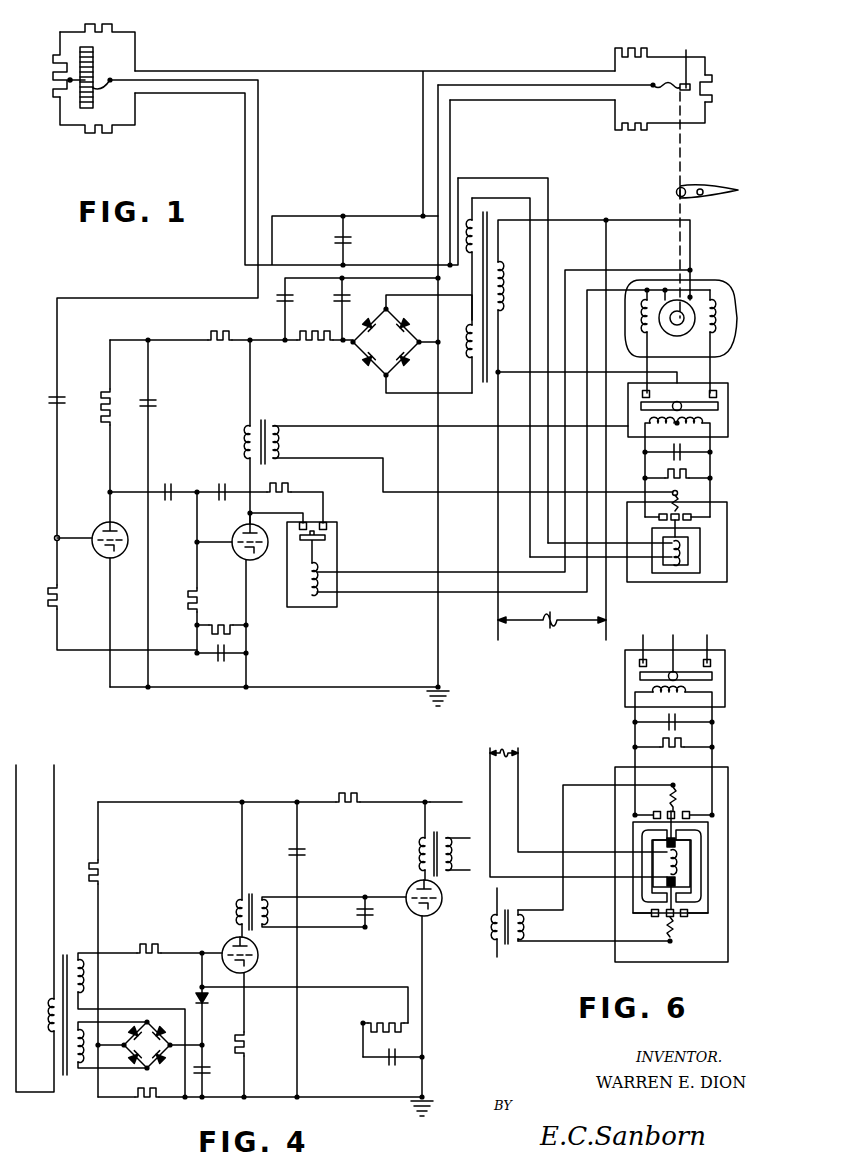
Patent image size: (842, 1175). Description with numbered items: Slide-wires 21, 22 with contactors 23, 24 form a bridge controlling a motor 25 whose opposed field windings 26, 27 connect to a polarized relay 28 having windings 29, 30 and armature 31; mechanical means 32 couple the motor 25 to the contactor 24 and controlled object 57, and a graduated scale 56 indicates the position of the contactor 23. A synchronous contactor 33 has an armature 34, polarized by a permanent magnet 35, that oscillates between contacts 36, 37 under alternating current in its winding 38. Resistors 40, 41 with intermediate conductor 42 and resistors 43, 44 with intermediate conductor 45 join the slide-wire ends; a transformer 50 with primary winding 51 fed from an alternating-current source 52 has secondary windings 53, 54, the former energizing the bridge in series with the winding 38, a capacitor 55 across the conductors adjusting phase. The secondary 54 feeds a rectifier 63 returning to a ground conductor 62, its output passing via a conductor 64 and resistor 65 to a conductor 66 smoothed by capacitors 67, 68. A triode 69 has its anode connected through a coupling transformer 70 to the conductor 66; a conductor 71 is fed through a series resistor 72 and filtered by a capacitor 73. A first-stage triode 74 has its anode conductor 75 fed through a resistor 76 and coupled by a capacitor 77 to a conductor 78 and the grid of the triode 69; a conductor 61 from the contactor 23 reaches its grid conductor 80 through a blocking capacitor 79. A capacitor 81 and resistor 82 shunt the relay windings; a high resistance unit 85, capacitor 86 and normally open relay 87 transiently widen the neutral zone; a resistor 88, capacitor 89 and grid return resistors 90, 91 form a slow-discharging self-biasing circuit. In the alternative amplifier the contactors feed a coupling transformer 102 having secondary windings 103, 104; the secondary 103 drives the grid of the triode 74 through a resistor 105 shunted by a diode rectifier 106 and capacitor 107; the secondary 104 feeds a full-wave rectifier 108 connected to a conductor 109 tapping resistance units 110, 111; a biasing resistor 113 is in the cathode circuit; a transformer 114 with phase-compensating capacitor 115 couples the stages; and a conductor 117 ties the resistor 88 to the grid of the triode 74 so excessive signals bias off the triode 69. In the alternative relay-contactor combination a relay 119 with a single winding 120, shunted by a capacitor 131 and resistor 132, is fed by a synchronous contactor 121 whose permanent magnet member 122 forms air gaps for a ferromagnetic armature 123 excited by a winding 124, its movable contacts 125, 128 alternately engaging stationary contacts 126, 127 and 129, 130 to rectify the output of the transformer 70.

In FIG. 1, the slide-wire 21 is at (52, 75).
In FIG. 1, the slide-wire 22 is at (712, 98).
In FIG. 1, the contactor 23 is at (78, 78).
In FIG. 1, the contactor 24 is at (690, 59).
In FIG. 1, the electric motor 25 is at (727, 297).
In FIG. 1, the field winding 26 is at (644, 338).
In FIG. 1, the field winding 27 is at (716, 338).
In FIG. 1, the polarized relay 28 is at (730, 394).
In FIG. 1, the relay winding 29 is at (652, 427).
In FIG. 1, the relay winding 30 is at (712, 428).
In FIG. 1, the armature 31 is at (740, 422).
In FIG. 1, the mechanical means 32 is at (684, 143).
In FIG. 1, the synchronous contactor 33 is at (727, 508).
In FIG. 1, the movable armature 34 is at (690, 527).
In FIG. 1, the permanent magnet 35 is at (700, 563).
In FIG. 1, the contact 36 is at (659, 518).
In FIG. 1, the contact 37 is at (680, 513).
In FIG. 1, the winding 38 is at (680, 566).
In FIG. 1, the resistor 40 is at (118, 29).
In FIG. 1, the resistor 41 is at (625, 53).
In FIG. 1, the intermediate conductor 42 is at (423, 138).
In FIG. 1, the resistor 43 is at (107, 132).
In FIG. 1, the resistor 44 is at (627, 130).
In FIG. 1, the intermediate conductor 45 is at (440, 156).
In FIG. 1, the transformer 50 is at (480, 314).
In FIG. 1, the primary winding 51 is at (504, 314).
In FIG. 1, the alternating-current source 52 is at (560, 630).
In FIG. 1, the secondary winding 53 is at (471, 258).
In FIG. 1, the secondary winding 54 is at (471, 338).
In FIG. 1, the capacitor 55 is at (352, 240).
In FIG. 1, the graduated scale 56 is at (96, 100).
In FIG. 1, the object 57 is at (724, 196).
In FIG. 1, the conductor 61 is at (262, 232).
In FIG. 1, the conductor 62 is at (437, 240).
In FIG. 4, the conductor 62 is at (316, 1100).
In FIG. 1, the rectifier 63 is at (412, 344).
In FIG. 1, the conductor 64 is at (352, 350).
In FIG. 1, the resistor 65 is at (309, 352).
In FIG. 1, the conductor 66 is at (274, 344).
In FIG. 4, the conductor 66 is at (442, 808).
In FIG. 1, the capacitor 67 is at (337, 308).
In FIG. 1, the capacitor 68 is at (279, 304).
In FIG. 1, the electron discharge device 69 is at (258, 562).
In FIG. 4, the electron discharge device 69 is at (432, 917).
In FIG. 1, the coupling transformer 70 is at (277, 424).
In FIG. 4, the coupling transformer 70 is at (444, 841).
In FIG. 6, the coupling transformer 70 is at (508, 905).
In FIG. 1, the conductor 71 is at (121, 340).
In FIG. 4, the conductor 71 is at (168, 803).
In FIG. 1, the series resistor 72 is at (210, 340).
In FIG. 4, the series resistor 72 is at (358, 803).
In FIG. 1, the capacitor 73 is at (160, 404).
In FIG. 4, the capacitor 73 is at (312, 856).
In FIG. 1, the electron discharge device 74 is at (101, 526).
In FIG. 4, the electron discharge device 74 is at (262, 960).
In FIG. 1, the conductor 75 is at (110, 460).
In FIG. 1, the resistor 76 is at (100, 402).
In FIG. 1, the capacitor 77 is at (171, 485).
In FIG. 1, the conductor 78 is at (194, 512).
In FIG. 1, the blocking capacitor 79 is at (50, 401).
In FIG. 1, the conductor 80 is at (55, 472).
In FIG. 1, the capacitor 81 is at (666, 456).
In FIG. 1, the resistor 82 is at (706, 478).
In FIG. 1, the high resistance unit 85 is at (292, 490).
In FIG. 1, the capacitor 86 is at (224, 485).
In FIG. 1, the normally open relay 87 is at (338, 546).
In FIG. 1, the resistor 88 is at (220, 622).
In FIG. 4, the resistor 88 is at (381, 1020).
In FIG. 1, the capacitor 89 is at (217, 660).
In FIG. 4, the capacitor 89 is at (394, 1073).
In FIG. 1, the grid return resistor 90 is at (190, 592).
In FIG. 1, the grid return resistor 91 is at (50, 589).
In FIG. 4, the coupling transformer 102 is at (69, 957).
In FIG. 4, the secondary winding 103 is at (97, 983).
In FIG. 4, the secondary winding 104 is at (82, 1075).
In FIG. 4, the resistor 105 is at (168, 952).
In FIG. 4, the diode rectifier 106 is at (196, 1000).
In FIG. 4, the capacitor 107 is at (210, 1073).
In FIG. 4, the rectifier 108 is at (149, 1044).
In FIG. 4, the conductor 109 is at (101, 943).
In FIG. 4, the resistance unit 110 is at (110, 873).
In FIG. 4, the resistance unit 111 is at (140, 1110).
In FIG. 4, the biasing resistor 113 is at (255, 1062).
In FIG. 4, the transformer 114 is at (256, 894).
In FIG. 4, the high-impedance capacitor 115 is at (357, 913).
In FIG. 4, the conductor 117 is at (329, 987).
In FIG. 6, the relay 119 is at (727, 667).
In FIG. 6, the winding 120 is at (688, 700).
In FIG. 6, the synchronous contactor 121 is at (729, 775).
In FIG. 6, the permanent magnet member 122 is at (690, 855).
In FIG. 6, the ferromagnetic armature 123 is at (692, 843).
In FIG. 6, the winding 124 is at (690, 883).
In FIG. 6, the movable contact 125 is at (676, 800).
In FIG. 6, the stationary contact 126 is at (656, 811).
In FIG. 6, the stationary contact 127 is at (688, 811).
In FIG. 6, the movable contact 128 is at (682, 921).
In FIG. 6, the stationary contact 129 is at (652, 920).
In FIG. 6, the stationary contact 130 is at (690, 918).
In FIG. 6, the capacitor 131 is at (665, 728).
In FIG. 6, the resistor 132 is at (690, 746).